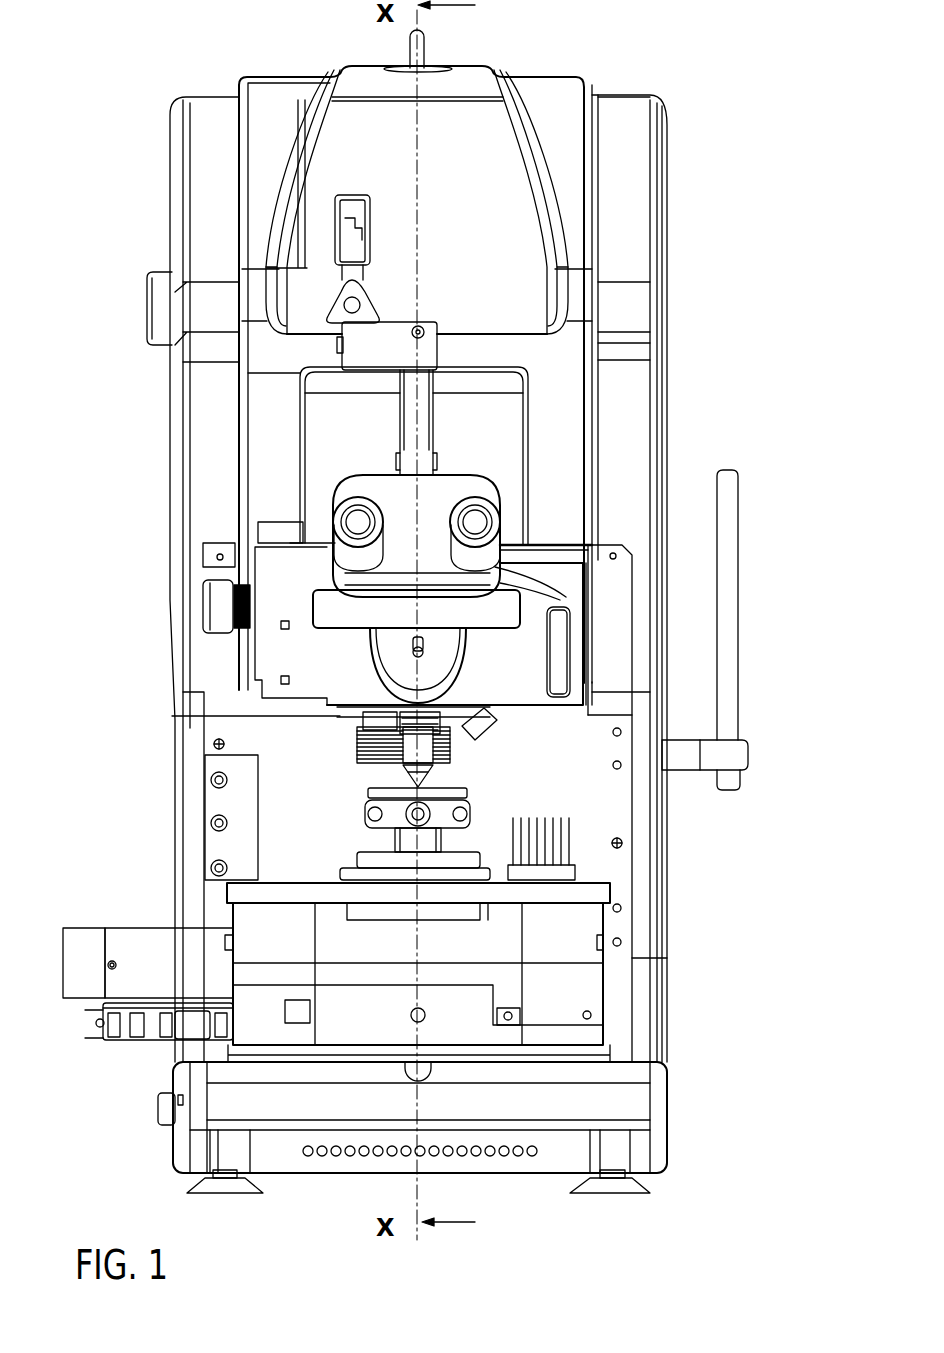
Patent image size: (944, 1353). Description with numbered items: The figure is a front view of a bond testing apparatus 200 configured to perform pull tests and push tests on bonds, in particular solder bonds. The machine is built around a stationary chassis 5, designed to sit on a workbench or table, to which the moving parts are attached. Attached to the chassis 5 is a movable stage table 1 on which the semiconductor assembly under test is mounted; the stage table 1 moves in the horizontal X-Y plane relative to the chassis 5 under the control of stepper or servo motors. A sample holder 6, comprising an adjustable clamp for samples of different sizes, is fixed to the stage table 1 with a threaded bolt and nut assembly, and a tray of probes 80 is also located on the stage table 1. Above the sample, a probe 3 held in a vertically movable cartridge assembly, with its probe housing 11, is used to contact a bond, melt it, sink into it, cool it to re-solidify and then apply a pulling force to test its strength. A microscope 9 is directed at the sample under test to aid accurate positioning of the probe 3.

The bond testing apparatus 200 is at (714, 244).
The stationary chassis 5 is at (666, 373).
The microscope 9 is at (362, 478).
The probe housing 11 is at (455, 748).
The probe 3 is at (408, 783).
The sample holder 6 is at (458, 797).
The tray of probes 80 is at (575, 872).
The stage table 1 is at (603, 925).